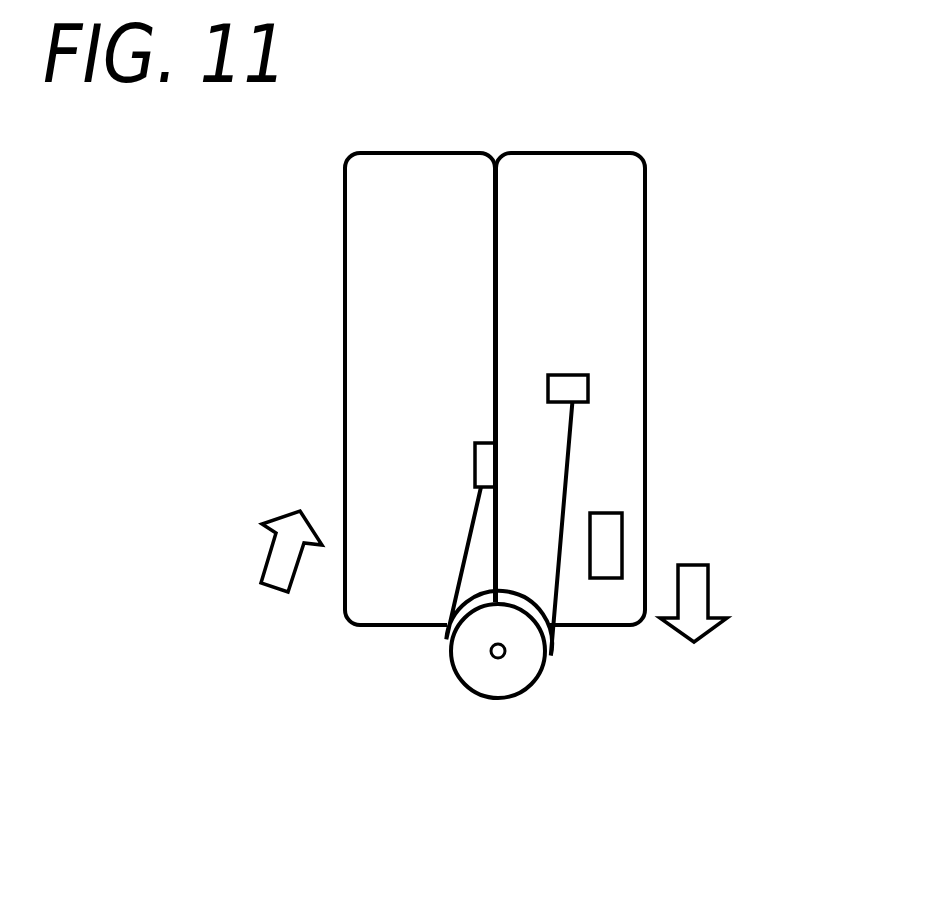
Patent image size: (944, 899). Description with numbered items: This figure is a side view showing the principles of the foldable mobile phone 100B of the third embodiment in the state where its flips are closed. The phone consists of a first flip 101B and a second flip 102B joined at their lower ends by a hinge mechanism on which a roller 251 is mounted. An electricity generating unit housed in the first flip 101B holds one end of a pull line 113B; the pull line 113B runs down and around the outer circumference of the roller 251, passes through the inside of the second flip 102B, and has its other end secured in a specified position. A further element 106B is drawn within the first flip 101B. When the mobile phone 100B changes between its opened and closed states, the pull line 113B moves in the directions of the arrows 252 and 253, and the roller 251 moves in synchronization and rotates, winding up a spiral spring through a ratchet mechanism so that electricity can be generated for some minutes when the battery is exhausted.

The foldable mobile phone 100B is at (530, 389).
The first flip 101B is at (647, 380).
The second flip 102B is at (345, 372).
The detector 106B is at (622, 543).
The pull line 113B is at (460, 563).
The roller 251 is at (498, 674).
The arrow 252 is at (710, 590).
The arrow 253 is at (272, 590).